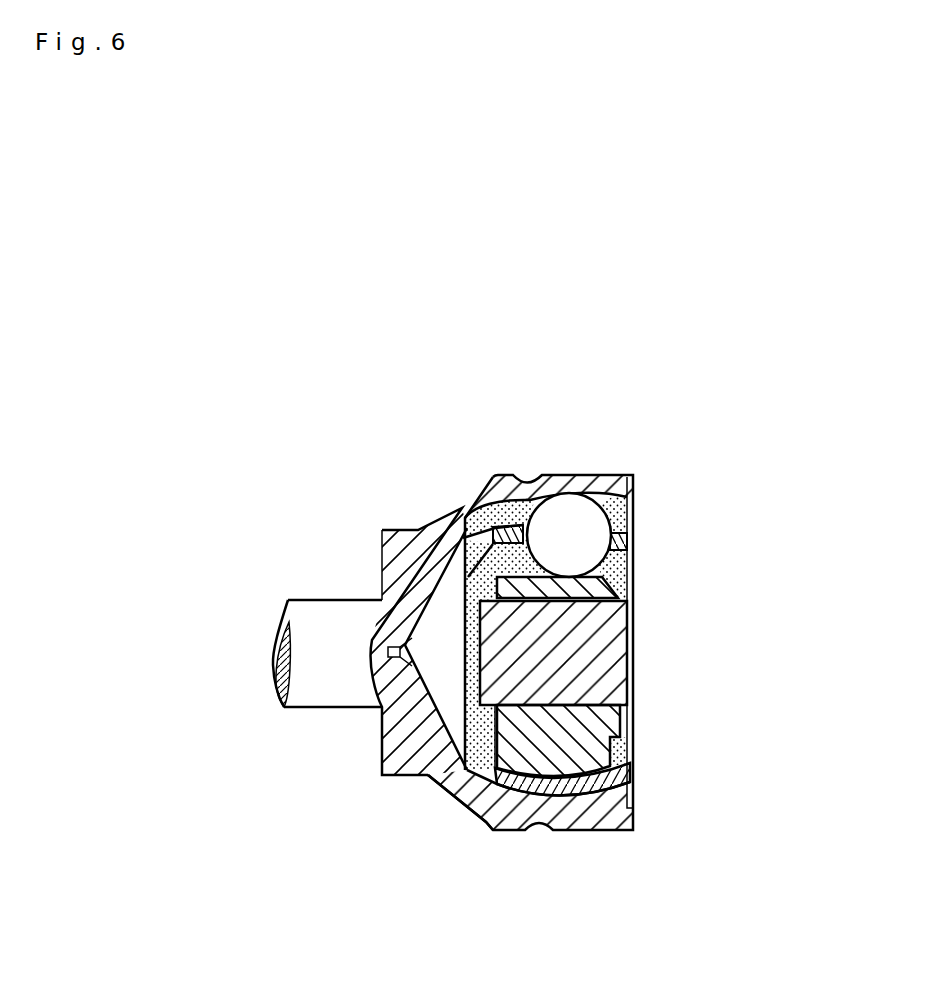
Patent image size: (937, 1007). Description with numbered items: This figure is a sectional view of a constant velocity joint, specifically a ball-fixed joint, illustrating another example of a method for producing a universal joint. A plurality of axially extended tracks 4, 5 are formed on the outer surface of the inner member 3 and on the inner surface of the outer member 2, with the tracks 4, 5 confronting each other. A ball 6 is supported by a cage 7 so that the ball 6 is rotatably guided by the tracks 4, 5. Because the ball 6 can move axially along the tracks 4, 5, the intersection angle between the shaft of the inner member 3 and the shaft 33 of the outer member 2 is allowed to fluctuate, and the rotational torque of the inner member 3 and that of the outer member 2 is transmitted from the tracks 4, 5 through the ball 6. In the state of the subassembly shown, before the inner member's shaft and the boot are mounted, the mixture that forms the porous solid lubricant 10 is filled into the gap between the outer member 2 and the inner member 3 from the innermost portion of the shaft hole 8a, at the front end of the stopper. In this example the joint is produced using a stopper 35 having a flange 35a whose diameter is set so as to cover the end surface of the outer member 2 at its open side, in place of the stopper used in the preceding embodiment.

The outer member 2 is at (565, 830).
The inner member 3 is at (483, 830).
The track 4 is at (466, 524).
The track 5 is at (522, 500).
The ball 6 is at (557, 510).
The cage 7 is at (617, 492).
The shaft hole 8a is at (472, 548).
The porous solid lubricant 10 is at (617, 588).
The shaft 33 is at (332, 683).
The stopper 35 is at (607, 653).
The flange 35a is at (633, 522).